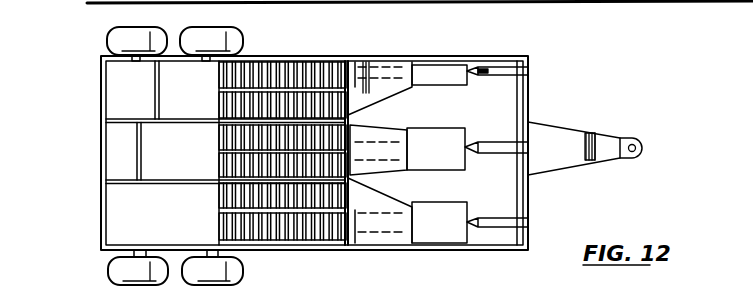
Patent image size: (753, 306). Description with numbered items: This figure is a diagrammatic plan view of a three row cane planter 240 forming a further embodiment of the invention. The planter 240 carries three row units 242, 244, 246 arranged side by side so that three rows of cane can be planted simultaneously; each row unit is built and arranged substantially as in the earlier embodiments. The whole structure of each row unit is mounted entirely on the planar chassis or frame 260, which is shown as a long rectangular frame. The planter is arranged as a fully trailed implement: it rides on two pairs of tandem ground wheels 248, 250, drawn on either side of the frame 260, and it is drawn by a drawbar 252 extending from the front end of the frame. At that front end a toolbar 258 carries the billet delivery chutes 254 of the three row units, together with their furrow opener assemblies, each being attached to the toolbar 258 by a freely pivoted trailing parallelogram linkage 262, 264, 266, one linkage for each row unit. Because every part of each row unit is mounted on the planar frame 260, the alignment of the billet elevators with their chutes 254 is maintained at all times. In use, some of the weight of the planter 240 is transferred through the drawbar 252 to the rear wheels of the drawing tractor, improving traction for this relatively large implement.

The planter 240 is at (88, 246).
The row unit 242 is at (200, 93).
The row unit 244 is at (205, 156).
The row unit 246 is at (205, 209).
The tandem ground wheels 248 is at (171, 31).
The tandem ground wheels 250 is at (124, 265).
The drawbar 252 is at (599, 133).
The billet delivery chutes 254 is at (427, 87).
The toolbar 258 is at (528, 191).
The frame 260 is at (313, 250).
The trailing parallelogram linkage 262 is at (497, 56).
The trailing parallelogram linkage 264 is at (496, 132).
The trailing parallelogram linkage 266 is at (514, 200).